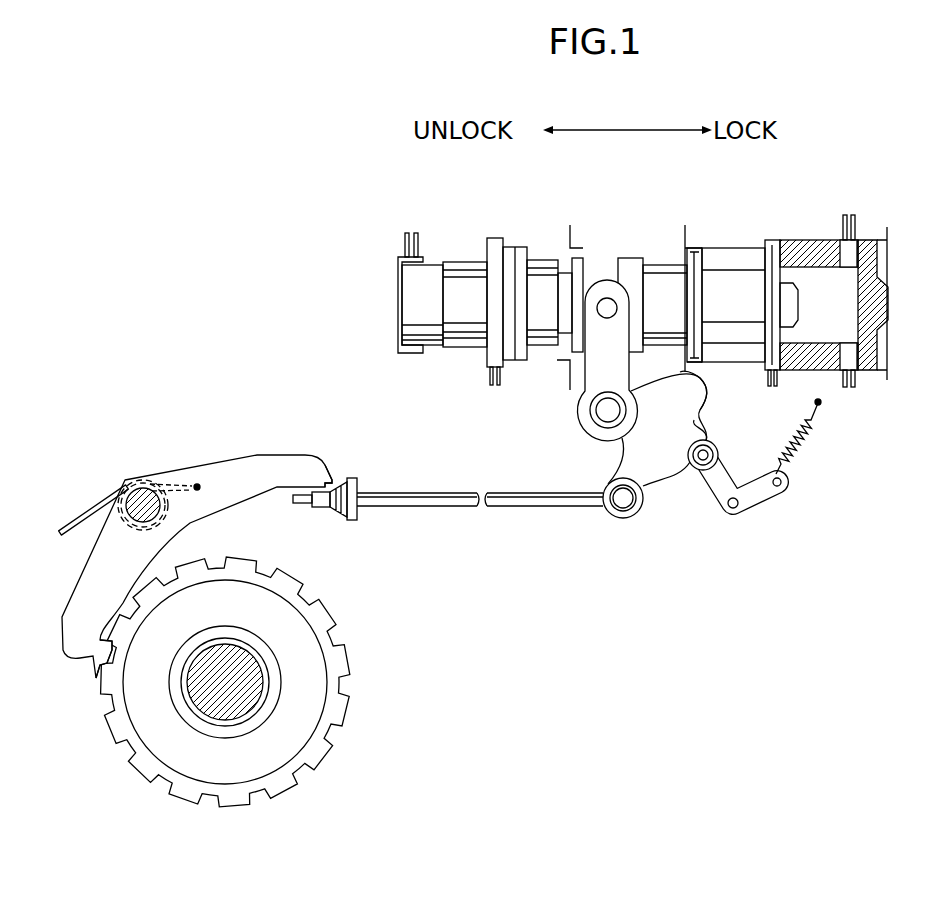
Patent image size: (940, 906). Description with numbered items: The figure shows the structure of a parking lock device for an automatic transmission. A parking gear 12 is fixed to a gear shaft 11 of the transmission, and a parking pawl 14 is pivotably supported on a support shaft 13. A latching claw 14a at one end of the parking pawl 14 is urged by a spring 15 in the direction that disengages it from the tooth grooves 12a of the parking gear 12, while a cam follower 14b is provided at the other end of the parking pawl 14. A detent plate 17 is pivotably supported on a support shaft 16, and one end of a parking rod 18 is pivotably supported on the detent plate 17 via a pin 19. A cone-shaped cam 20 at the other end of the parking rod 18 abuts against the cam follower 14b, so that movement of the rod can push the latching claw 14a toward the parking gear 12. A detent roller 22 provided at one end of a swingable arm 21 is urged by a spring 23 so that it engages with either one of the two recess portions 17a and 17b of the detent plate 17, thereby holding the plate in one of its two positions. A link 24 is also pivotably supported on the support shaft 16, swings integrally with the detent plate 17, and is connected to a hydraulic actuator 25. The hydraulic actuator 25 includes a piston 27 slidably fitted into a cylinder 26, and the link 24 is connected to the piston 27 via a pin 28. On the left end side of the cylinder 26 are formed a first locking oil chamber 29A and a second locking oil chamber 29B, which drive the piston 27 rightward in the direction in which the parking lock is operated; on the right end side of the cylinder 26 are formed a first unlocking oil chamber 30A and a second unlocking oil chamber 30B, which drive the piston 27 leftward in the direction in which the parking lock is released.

The gear shaft 11 is at (247, 672).
The parking gear 12 is at (355, 657).
The tooth grooves 12a is at (342, 632).
The support shaft 13 is at (143, 500).
The parking pawl 14 is at (230, 447).
The latching claw 14a is at (95, 652).
The cam follower 14b is at (325, 480).
The spring 15 is at (75, 517).
The support shaft 16 is at (603, 410).
The detent plate 17 is at (665, 495).
The recess portion 17a is at (688, 458).
The recess portion 17b is at (703, 407).
The parking rod 18 is at (435, 493).
The pin 19 is at (620, 507).
The cone-shaped cam 20 is at (347, 520).
The swingable arm 21 is at (715, 483).
The detent roller 22 is at (718, 449).
The spring 23 is at (807, 435).
The link 24 is at (617, 363).
The hydraulic actuator 25 is at (792, 196).
The cylinder 26 is at (547, 252).
The piston 27 is at (655, 309).
The pin 28 is at (607, 298).
The first locking oil chamber 29A is at (490, 252).
The second locking oil chamber 29B is at (400, 258).
The first unlocking oil chamber 30A is at (818, 278).
The second unlocking oil chamber 30B is at (742, 250).